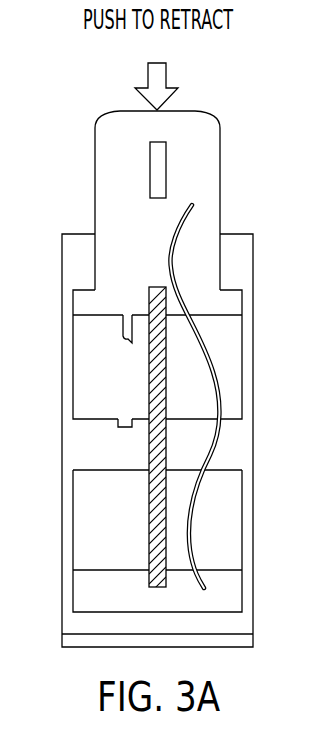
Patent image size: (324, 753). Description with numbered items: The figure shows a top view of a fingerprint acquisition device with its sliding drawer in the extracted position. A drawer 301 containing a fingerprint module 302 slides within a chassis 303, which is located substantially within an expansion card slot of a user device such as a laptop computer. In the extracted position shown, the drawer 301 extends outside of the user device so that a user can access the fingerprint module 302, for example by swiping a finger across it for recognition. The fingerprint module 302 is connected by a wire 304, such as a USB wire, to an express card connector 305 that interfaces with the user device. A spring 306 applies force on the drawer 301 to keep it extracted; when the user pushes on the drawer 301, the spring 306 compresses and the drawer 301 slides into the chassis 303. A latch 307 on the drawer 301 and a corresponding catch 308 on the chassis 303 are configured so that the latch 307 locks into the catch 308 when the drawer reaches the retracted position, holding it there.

The drawer 301 is at (203, 188).
The fingerprint module 302 is at (157, 170).
The chassis 303 is at (77, 445).
The wire 304 is at (212, 372).
The express card connector 305 is at (240, 637).
The spring 306 is at (158, 504).
The latch 307 is at (121, 324).
The catch 308 is at (124, 418).